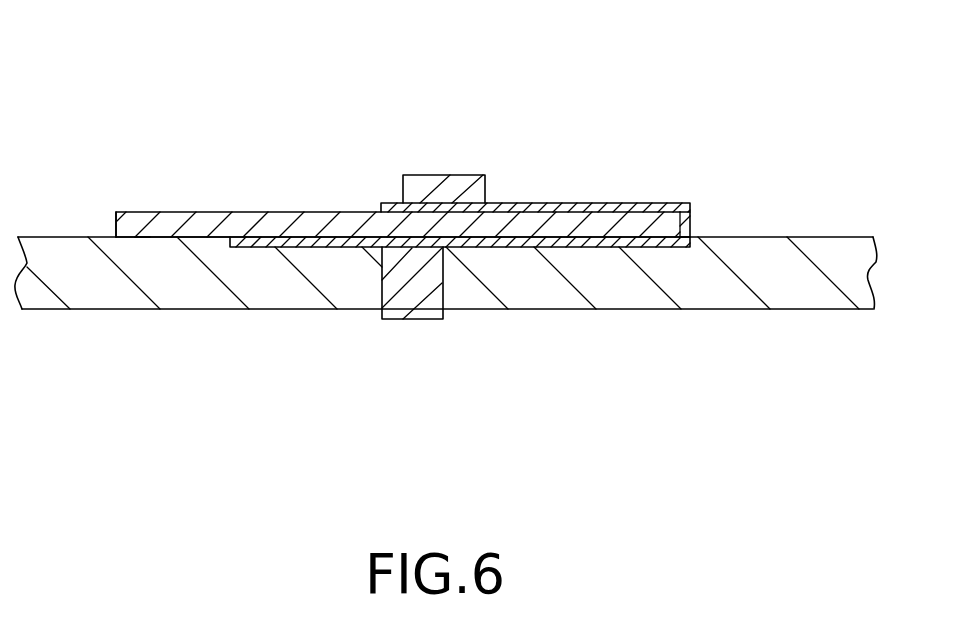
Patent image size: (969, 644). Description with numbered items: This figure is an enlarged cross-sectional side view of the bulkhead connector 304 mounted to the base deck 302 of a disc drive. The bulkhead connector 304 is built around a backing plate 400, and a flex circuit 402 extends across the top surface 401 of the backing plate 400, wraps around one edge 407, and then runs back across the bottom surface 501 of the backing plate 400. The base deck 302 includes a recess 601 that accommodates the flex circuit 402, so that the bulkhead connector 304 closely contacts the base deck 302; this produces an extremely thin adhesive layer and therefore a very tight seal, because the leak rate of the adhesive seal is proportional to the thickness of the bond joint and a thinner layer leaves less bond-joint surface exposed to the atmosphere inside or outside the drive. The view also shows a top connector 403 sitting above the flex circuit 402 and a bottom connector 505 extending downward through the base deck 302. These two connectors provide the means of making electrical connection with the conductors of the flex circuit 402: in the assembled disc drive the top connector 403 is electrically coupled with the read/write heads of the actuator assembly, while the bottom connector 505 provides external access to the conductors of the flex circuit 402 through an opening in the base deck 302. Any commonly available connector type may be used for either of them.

The base deck 302 is at (827, 248).
The bulkhead connector 304 is at (339, 100).
The backing plate 400 is at (205, 218).
The top surface 401 is at (147, 213).
The flex circuit 402 is at (617, 204).
The top connector 403 is at (453, 187).
The edge 407 is at (690, 219).
The bottom surface 501 is at (141, 236).
The bottom connector 505 is at (407, 297).
The recess 601 is at (680, 212).